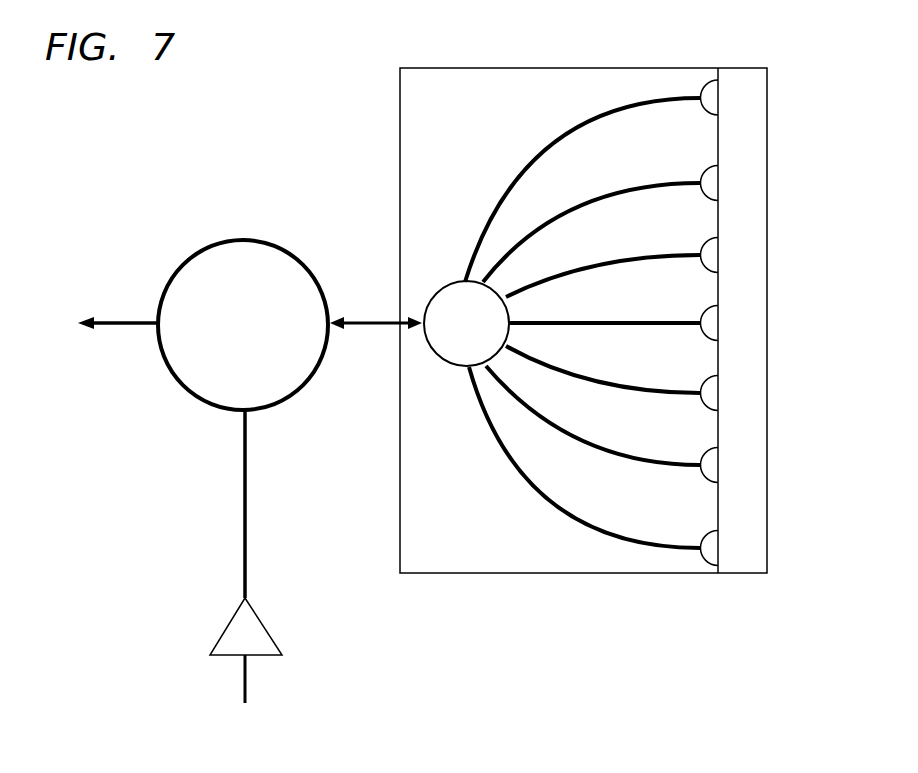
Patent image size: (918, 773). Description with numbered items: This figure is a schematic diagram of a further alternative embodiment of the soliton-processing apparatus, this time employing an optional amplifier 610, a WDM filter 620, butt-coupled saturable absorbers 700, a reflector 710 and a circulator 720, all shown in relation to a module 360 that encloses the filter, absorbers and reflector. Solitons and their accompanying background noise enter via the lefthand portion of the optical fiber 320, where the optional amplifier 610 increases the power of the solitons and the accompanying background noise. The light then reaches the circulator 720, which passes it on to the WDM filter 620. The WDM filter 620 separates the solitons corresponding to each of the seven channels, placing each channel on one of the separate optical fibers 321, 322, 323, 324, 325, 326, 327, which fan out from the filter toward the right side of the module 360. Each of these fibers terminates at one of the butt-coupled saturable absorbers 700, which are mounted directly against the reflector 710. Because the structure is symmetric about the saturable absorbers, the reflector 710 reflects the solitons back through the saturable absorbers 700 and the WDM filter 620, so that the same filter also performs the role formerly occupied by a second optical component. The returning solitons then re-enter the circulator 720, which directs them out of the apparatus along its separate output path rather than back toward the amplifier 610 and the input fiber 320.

The optical fiber 320 is at (245, 507).
The separate optical fiber 321 is at (572, 516).
The separate optical fiber 322 is at (630, 461).
The separate optical fiber 323 is at (641, 396).
The separate optical fiber 324 is at (615, 326).
The separate optical fiber 325 is at (598, 264).
The separate optical fiber 326 is at (598, 206).
The separate optical fiber 327 is at (583, 126).
The optical switch module 360 is at (606, 64).
The amplifier 610 is at (265, 625).
The WDM filter 620 is at (445, 283).
The butt-coupled saturable absorbers 700 is at (702, 94).
The reflector 710 is at (733, 67).
The circulator 720 is at (245, 240).